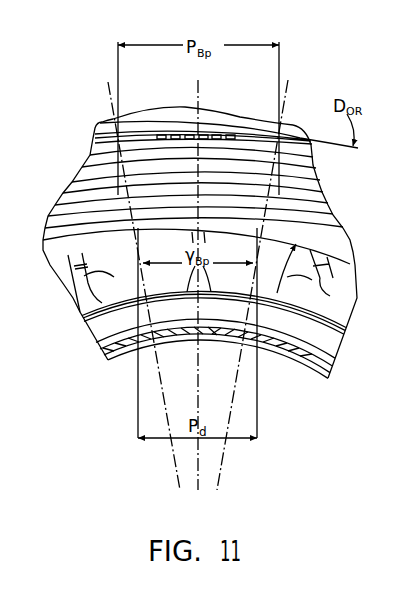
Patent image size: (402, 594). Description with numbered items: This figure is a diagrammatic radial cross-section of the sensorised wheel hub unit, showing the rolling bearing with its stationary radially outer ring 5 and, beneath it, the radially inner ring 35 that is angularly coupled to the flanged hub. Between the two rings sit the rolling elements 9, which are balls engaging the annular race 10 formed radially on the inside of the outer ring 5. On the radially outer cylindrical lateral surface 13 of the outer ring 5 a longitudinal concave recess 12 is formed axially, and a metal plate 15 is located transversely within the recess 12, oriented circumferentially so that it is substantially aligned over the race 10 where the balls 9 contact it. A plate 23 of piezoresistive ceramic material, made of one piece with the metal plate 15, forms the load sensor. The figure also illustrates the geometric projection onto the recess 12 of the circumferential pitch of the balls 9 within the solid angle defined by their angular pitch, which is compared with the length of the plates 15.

The radially outer ring 5 is at (322, 198).
The rolling elements 9 is at (65, 280).
The annular race 10 is at (349, 305).
The longitudinal concave recess 12 is at (146, 130).
The radially outer cylindrical lateral surface 13 is at (292, 129).
The metal plate 15 is at (166, 136).
The plate of piezoresistive ceramic material 23 is at (216, 115).
The radially inner ring 35 is at (97, 323).